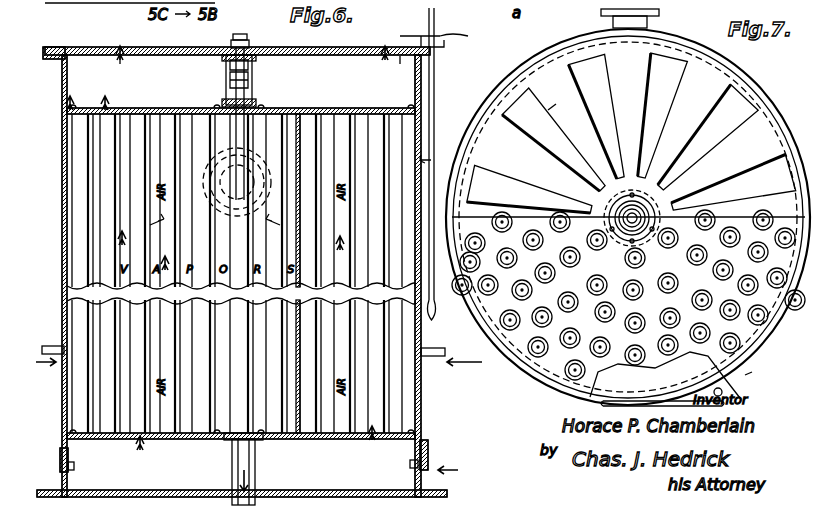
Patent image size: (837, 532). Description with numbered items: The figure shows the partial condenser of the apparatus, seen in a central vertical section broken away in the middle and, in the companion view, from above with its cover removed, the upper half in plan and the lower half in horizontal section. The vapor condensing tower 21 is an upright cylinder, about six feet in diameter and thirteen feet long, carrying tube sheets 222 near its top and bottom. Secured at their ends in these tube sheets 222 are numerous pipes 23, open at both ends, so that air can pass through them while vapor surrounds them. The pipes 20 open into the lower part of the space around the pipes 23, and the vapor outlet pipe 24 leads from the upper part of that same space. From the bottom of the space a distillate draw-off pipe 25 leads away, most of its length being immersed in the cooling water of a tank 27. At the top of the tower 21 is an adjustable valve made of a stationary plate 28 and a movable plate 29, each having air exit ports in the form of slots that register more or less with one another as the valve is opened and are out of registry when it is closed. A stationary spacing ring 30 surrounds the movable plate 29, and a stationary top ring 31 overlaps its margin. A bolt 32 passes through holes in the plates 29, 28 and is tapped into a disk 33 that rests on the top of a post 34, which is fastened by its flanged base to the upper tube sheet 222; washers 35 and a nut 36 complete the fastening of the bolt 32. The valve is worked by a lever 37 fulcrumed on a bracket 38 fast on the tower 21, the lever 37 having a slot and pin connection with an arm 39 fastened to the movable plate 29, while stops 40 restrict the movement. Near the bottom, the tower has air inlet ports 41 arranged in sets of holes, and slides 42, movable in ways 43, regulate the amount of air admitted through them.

In FIG. 6, the pipes 20 is at (52, 346).
In FIG. 6, the vapor condensing tower 21 is at (62, 264).
In FIG. 6, the pipes 23 is at (372, 112).
In FIG. 7, the pipes 23 is at (676, 260).
In FIG. 6, the vapor outlet pipe 24 is at (252, 210).
In FIG. 6, the distillate draw-off pipe 25 is at (252, 476).
In FIG. 7, the tank 27 is at (648, 20).
In FIG. 6, the stationary plate 28 is at (260, 66).
In FIG. 7, the stationary plate 28 is at (631, 133).
In FIG. 6, the movable plate 29 is at (372, 46).
In FIG. 7, the movable plate 29 is at (559, 99).
In FIG. 6, the stationary spacing ring 30 is at (46, 52).
In FIG. 6, the stationary top ring 31 is at (70, 52).
In FIG. 7, the stationary top ring 31 is at (768, 92).
In FIG. 6, the bolt 32 is at (250, 60).
In FIG. 7, the bolt 32 is at (636, 207).
In FIG. 6, the disk 33 is at (228, 60).
In FIG. 6, the post 34 is at (236, 90).
In FIG. 7, the post 34 is at (646, 236).
In FIG. 6, the washers 35 is at (248, 44).
In FIG. 7, the washers 35 is at (625, 204).
In FIG. 6, the nut 36 is at (250, 86).
In FIG. 6, the lever 37 is at (435, 86).
In FIG. 6, the bracket 38 is at (423, 158).
In FIG. 6, the arm 39 is at (422, 26).
In FIG. 6, the stops 40 is at (463, 37).
In FIG. 6, the air inlet ports 41 is at (82, 471).
In FIG. 7, the air inlet ports 41 is at (648, 402).
In FIG. 7, the slides 42 is at (745, 375).
In FIG. 6, the ways 43 is at (60, 458).
In FIG. 7, the ways 43 is at (722, 390).
In FIG. 6, the tube sheets 222 is at (298, 113).
In FIG. 7, the tube sheets 222 is at (604, 263).